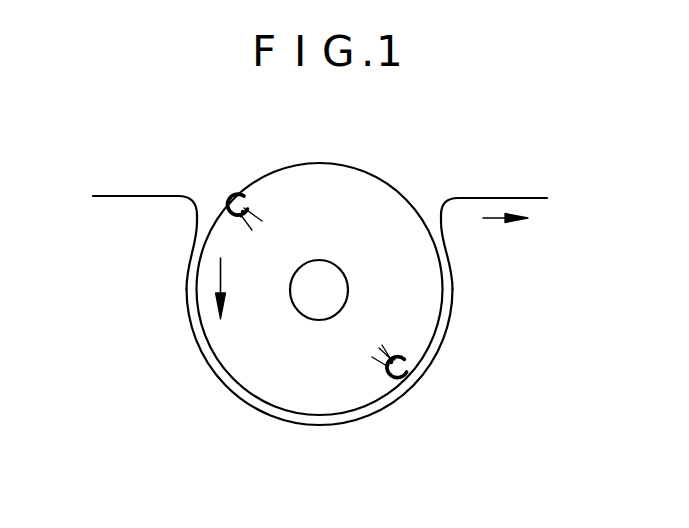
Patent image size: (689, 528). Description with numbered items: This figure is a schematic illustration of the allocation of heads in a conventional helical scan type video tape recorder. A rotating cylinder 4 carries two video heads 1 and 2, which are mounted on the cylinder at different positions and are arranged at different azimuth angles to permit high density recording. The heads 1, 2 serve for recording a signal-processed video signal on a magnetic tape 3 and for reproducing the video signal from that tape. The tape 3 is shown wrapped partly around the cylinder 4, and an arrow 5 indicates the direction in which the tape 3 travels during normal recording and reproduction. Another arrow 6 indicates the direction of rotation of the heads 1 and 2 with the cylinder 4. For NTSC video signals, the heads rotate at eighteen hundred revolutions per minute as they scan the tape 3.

The head 1 is at (236, 190).
The head 2 is at (414, 361).
The magnetic tape 3 is at (503, 198).
The rotating cylinder 4 is at (400, 188).
The arrow 5 is at (490, 221).
The arrow 6 is at (222, 273).